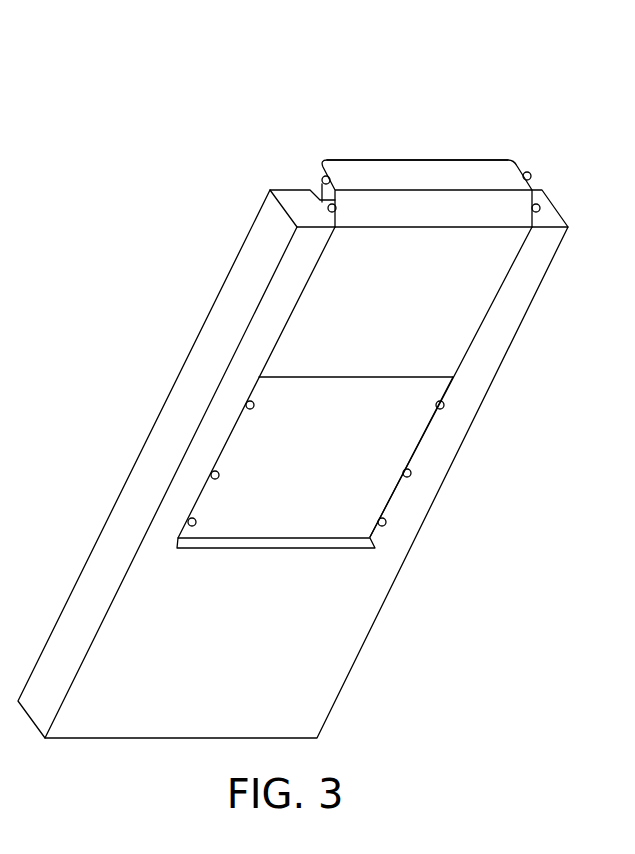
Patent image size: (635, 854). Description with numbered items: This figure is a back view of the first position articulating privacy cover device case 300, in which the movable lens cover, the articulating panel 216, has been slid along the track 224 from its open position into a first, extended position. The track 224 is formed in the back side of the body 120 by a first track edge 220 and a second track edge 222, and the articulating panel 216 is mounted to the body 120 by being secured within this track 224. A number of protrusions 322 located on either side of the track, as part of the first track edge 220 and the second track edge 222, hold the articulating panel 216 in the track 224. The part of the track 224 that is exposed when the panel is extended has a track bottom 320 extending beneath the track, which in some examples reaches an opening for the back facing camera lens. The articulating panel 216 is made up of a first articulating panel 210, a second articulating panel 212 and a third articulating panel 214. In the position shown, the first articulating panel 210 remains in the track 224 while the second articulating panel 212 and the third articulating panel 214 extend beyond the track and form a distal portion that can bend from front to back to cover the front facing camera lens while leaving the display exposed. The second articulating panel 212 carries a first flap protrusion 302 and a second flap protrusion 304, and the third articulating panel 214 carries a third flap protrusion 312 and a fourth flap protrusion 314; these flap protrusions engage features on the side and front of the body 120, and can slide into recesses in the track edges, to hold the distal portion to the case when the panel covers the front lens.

The body 120 is at (78, 573).
The first articulating panel 210 is at (480, 312).
The second articulating panel 212 is at (410, 213).
The third articulating panel 214 is at (450, 158).
The articulating panel 216 is at (398, 147).
The first track edge 220 is at (227, 442).
The second track edge 222 is at (400, 507).
The track 224 is at (348, 398).
The first position articulating privacy cover device case 300 is at (243, 136).
The first flap protrusion 302 is at (328, 209).
The second flap protrusion 304 is at (540, 209).
The third flap protrusion 312 is at (322, 181).
The fourth flap protrusion 314 is at (531, 177).
The track bottom 320 is at (273, 527).
The protrusions 322 is at (254, 405).